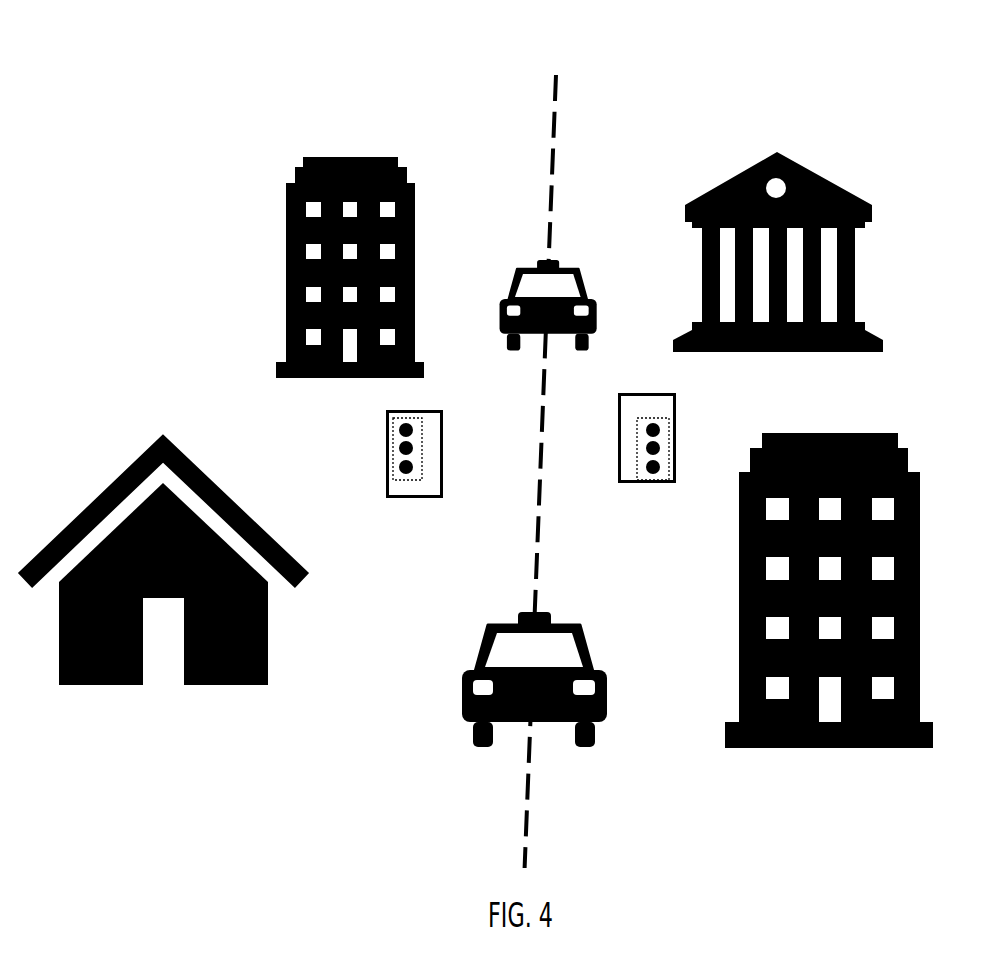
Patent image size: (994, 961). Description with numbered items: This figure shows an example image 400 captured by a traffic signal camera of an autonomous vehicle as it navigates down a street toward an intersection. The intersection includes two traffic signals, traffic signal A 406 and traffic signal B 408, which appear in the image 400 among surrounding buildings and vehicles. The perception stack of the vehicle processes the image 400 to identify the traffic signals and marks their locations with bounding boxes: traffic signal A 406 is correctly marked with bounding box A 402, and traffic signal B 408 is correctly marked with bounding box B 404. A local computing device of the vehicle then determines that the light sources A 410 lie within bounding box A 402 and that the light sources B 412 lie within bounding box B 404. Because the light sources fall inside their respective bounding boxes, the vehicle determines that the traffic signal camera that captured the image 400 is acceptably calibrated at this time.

The image 400 is at (166, 62).
The bounding box A 402 is at (386, 452).
The bounding box B 404 is at (676, 405).
The traffic signal A 406 is at (394, 614).
The traffic signal B 408 is at (660, 586).
The light sources A 410 is at (412, 480).
The light sources B 412 is at (753, 618).